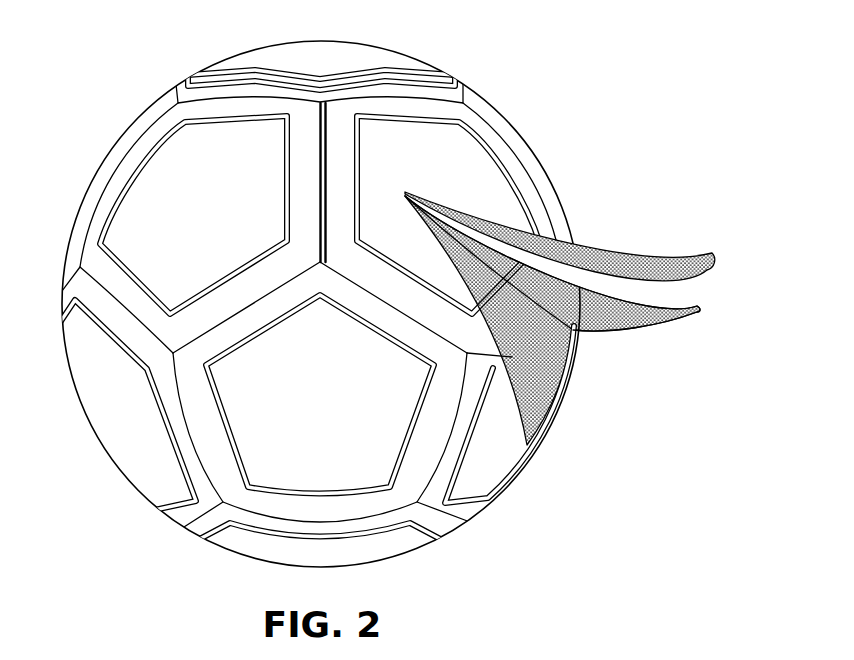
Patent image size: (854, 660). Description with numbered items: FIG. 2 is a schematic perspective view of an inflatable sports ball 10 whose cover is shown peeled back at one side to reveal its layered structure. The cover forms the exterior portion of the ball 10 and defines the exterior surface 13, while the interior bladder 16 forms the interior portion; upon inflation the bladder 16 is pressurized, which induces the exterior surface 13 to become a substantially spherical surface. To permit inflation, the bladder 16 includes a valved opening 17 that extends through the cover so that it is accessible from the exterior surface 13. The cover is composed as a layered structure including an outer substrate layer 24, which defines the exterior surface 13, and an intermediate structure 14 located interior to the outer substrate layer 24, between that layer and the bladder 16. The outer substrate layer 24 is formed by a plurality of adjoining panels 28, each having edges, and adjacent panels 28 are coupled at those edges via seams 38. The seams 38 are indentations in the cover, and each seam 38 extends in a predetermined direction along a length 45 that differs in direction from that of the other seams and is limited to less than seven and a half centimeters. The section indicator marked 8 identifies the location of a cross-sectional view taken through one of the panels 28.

The sports ball 10 is at (338, 298).
The exterior surface 13 is at (123, 178).
The section line 8 is at (352, 345).
The intermediate structure 14 is at (653, 320).
The interior bladder 16 is at (541, 351).
The valved opening 17 is at (521, 363).
The outer substrate layer 24 is at (655, 283).
The panels 28 is at (512, 468).
The seams 38 is at (320, 148).
The length 45 is at (330, 168).